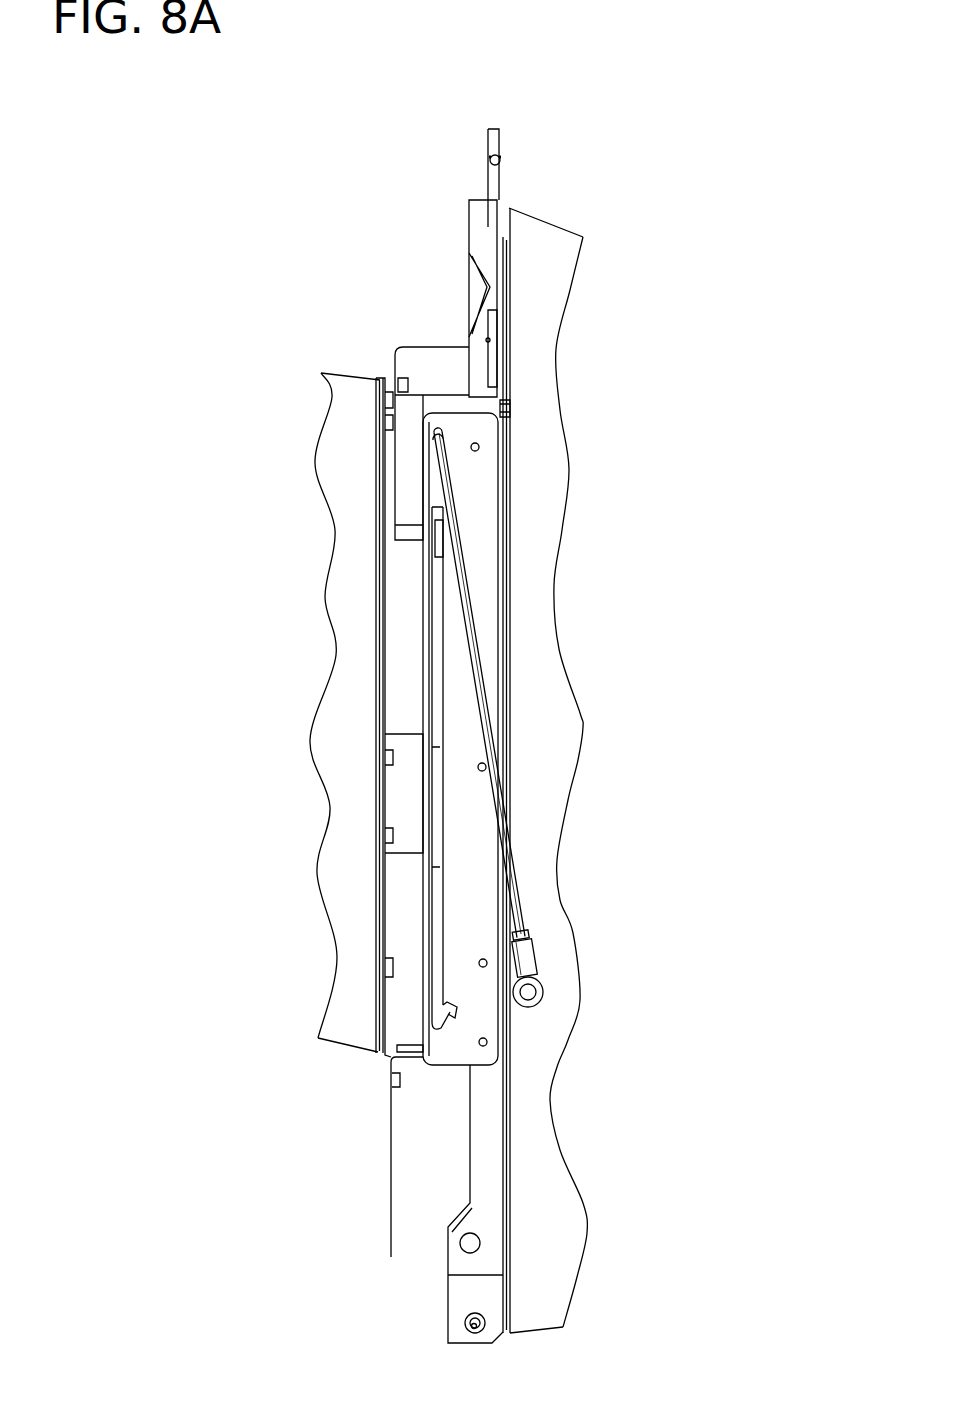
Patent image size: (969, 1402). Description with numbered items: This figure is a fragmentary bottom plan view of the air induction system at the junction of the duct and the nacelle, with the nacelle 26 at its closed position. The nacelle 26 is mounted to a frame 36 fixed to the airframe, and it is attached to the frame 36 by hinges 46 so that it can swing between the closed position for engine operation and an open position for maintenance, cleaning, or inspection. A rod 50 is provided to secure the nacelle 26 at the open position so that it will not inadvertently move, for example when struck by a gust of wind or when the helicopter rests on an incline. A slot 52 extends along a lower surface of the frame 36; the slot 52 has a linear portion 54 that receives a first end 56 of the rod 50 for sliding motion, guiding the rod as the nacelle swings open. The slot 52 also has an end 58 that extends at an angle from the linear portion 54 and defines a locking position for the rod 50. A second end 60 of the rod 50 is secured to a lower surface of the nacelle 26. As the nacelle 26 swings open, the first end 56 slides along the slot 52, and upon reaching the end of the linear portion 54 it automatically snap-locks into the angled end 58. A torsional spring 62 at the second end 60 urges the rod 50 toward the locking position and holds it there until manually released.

The nacelle 26 is at (547, 227).
The frame 36 is at (428, 345).
The hinges 46 is at (466, 1322).
The rod 50 is at (475, 632).
The slot 52 is at (450, 726).
The linear portion 54 is at (445, 890).
The first end 56 is at (437, 437).
The end 58 is at (455, 1012).
The second end 60 is at (532, 947).
The torsional spring 62 is at (543, 990).